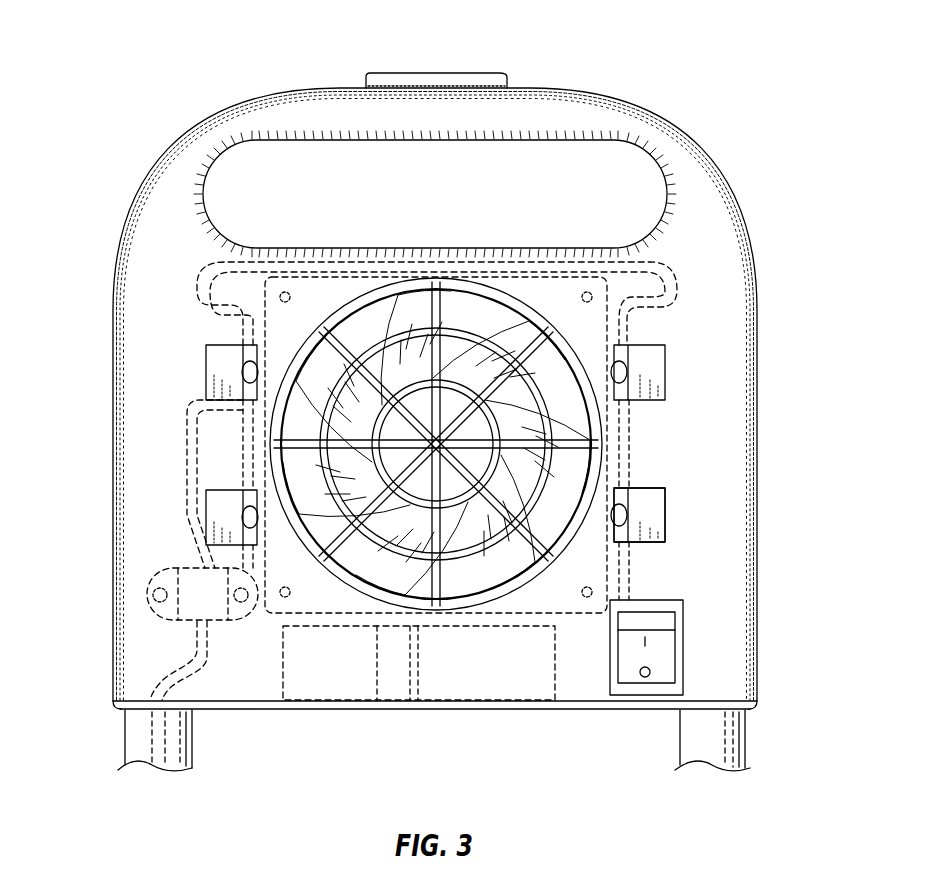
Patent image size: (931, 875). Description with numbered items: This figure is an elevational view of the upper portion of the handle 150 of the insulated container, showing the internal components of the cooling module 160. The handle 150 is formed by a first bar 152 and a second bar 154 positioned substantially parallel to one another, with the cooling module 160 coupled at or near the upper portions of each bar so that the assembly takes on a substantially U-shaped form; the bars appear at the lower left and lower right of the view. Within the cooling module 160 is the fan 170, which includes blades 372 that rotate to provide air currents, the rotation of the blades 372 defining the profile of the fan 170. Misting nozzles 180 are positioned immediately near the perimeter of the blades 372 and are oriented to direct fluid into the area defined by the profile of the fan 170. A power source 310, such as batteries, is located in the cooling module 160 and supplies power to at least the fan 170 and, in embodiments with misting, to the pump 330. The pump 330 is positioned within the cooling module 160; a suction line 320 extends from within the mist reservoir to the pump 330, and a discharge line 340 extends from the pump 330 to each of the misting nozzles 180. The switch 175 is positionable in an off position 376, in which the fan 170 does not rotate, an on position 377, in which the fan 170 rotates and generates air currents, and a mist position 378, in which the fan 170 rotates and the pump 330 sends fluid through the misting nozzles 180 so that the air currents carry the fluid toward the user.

The handle 150 is at (735, 63).
The cooling module 160 is at (745, 336).
The fan 170 is at (590, 412).
The blades 372 is at (545, 525).
The discharge line 340 is at (185, 452).
The pump 330 is at (178, 582).
The suction line 320 is at (178, 662).
The power source 310 is at (343, 688).
The switch 175 is at (645, 686).
The mist position 378 is at (722, 608).
The on position 377 is at (712, 648).
The off position 376 is at (712, 686).
The misting nozzles 180 is at (665, 516).
The first bar 152 is at (125, 745).
The second bar 154 is at (746, 744).